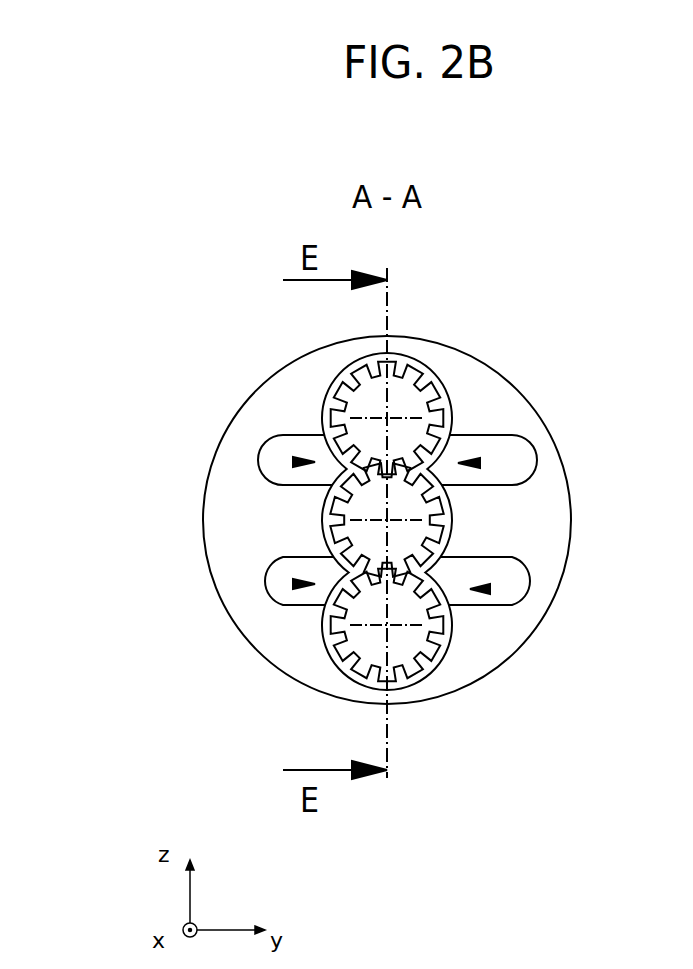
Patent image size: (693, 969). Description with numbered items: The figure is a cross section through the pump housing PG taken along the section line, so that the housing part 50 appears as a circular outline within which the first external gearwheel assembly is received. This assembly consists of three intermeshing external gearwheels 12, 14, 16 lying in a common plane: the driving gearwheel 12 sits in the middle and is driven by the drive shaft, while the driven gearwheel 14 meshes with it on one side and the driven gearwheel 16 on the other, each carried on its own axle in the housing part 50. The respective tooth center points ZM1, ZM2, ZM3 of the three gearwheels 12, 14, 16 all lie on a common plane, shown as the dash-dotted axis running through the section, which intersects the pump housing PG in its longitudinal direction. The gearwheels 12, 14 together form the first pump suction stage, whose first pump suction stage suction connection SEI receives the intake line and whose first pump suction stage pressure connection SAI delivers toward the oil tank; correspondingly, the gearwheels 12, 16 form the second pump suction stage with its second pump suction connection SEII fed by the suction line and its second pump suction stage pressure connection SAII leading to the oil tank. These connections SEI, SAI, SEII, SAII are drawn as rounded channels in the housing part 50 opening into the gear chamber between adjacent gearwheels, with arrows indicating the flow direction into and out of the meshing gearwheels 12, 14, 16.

The pump housing PG is at (474, 270).
The housing part 50 is at (458, 368).
The driven gearwheel 14 is at (407, 403).
The driving gearwheel 12 is at (407, 505).
The driven gearwheel 16 is at (405, 638).
The tooth center point ZM1 is at (387, 520).
The tooth center point ZM2 is at (387, 418).
The tooth center point ZM3 is at (387, 625).
The first pump suction stage pressure connection SAI is at (293, 462).
The second pump suction stage pressure connection SAII is at (490, 589).
The first pump suction stage suction connection SEI is at (480, 462).
The second pump suction connection SEII is at (293, 584).